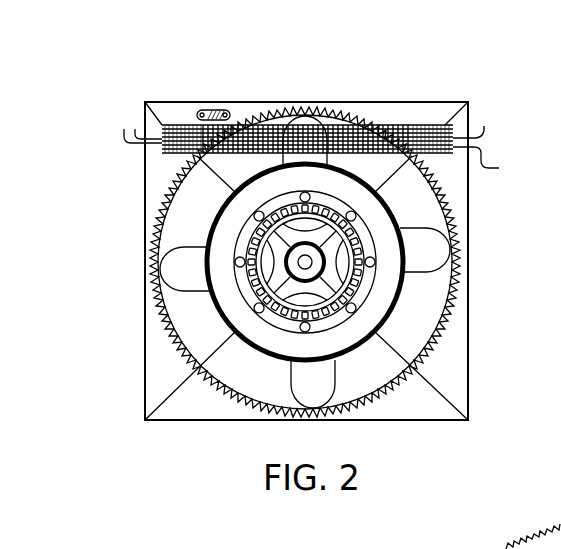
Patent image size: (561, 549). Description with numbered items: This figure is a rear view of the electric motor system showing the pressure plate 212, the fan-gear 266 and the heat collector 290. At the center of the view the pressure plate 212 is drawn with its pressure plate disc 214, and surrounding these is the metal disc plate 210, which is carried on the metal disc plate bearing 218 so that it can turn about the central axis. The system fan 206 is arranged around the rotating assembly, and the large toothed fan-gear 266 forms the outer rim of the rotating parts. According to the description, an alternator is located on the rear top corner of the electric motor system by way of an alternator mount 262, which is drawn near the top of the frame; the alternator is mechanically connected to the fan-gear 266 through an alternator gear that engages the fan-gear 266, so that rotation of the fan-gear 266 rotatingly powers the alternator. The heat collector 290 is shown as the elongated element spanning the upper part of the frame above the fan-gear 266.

The system fan 206 is at (170, 246).
The metal disc plate 210 is at (430, 333).
The pressure plate 212 is at (357, 213).
The pressure plate disc 214 is at (322, 274).
The metal disc plate bearing 218 is at (290, 268).
The alternator mount 262 is at (213, 110).
The fan-gear 266 is at (460, 267).
The heat collector 290 is at (336, 150).